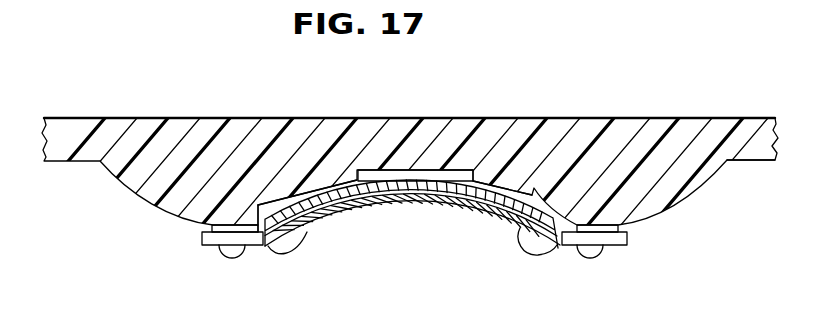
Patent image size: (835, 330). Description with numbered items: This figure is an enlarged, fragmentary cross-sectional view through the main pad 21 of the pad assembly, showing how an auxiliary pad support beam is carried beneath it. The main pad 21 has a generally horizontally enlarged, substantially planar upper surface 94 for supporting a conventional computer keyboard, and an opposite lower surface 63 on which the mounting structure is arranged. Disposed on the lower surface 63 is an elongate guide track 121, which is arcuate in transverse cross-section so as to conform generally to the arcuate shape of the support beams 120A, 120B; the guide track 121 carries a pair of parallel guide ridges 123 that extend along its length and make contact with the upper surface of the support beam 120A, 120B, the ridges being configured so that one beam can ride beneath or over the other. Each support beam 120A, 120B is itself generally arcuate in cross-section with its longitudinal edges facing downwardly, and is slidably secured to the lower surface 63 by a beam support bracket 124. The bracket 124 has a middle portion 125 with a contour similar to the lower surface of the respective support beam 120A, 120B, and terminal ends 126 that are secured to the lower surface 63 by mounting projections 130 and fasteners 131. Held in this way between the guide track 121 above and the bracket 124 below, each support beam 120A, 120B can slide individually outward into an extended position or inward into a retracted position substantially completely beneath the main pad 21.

The main pad 21 is at (634, 90).
The lower surface 63 is at (751, 161).
The upper surface 94 is at (143, 118).
The guide track 121 is at (274, 195).
The guide ridges 123 is at (345, 176).
The middle portion 125 is at (437, 171).
The support beam 120A is at (416, 195).
The support beam 120B is at (338, 201).
The beam support bracket 124 is at (528, 249).
The terminal ends 126 is at (202, 244).
The mounting projections 130 is at (250, 244).
The fasteners 131 is at (232, 251).